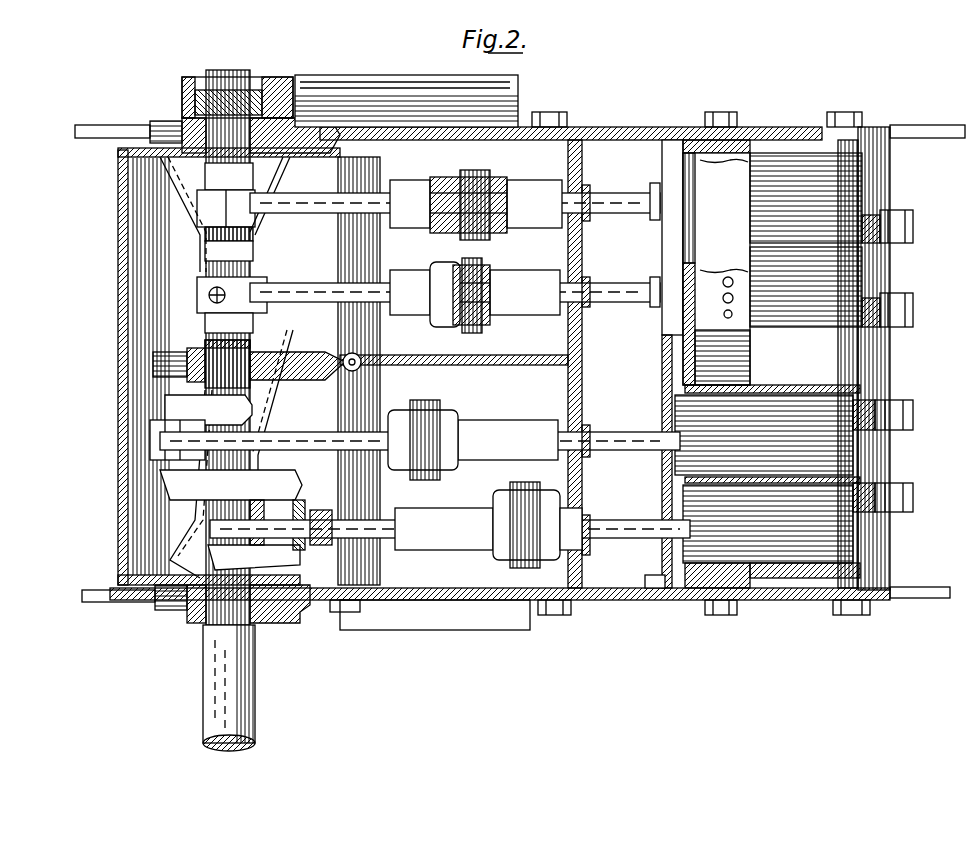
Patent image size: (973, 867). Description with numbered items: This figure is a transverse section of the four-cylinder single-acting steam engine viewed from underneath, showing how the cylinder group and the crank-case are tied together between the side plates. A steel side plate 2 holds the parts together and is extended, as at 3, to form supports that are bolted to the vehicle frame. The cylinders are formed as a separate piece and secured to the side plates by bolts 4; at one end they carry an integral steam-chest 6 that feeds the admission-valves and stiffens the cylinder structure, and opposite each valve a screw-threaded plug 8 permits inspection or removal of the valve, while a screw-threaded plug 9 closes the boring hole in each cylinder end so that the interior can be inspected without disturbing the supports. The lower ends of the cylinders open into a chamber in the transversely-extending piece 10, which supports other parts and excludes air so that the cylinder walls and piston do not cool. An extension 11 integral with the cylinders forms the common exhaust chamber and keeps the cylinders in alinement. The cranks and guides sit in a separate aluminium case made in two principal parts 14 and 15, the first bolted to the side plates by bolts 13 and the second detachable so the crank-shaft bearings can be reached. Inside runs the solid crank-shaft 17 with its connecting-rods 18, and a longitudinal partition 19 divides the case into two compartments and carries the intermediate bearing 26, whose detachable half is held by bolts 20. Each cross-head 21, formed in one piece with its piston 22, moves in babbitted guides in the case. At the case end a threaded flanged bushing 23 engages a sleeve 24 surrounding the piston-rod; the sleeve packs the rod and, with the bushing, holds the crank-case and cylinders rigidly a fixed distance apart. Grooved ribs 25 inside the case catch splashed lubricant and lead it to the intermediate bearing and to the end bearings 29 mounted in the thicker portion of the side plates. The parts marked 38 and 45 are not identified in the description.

The side plate 2 is at (627, 127).
The extension 3 is at (75, 130).
The bolt 4 is at (728, 612).
The steam-chest 6 is at (888, 163).
The screw-threaded plug 8 is at (905, 222).
The screw-threaded plug 9 is at (892, 527).
The transversely-extending piece 10 is at (660, 243).
The extension 11 is at (740, 354).
The bolt 13 is at (556, 614).
The case part 14 is at (452, 567).
The case part 15 is at (118, 213).
The crank-shaft 17 is at (210, 679).
The connecting-rod 18 is at (386, 300).
The partition 19 is at (497, 366).
The bolt 20 is at (153, 353).
The cross-head 21 is at (507, 522).
The piston 22 is at (808, 578).
The flanged bushing 23 is at (590, 543).
The sleeve 24 is at (655, 585).
The rib 25 is at (180, 535).
The intermediate bearing 26 is at (205, 345).
The end bearing 29 is at (200, 612).
The nut 38 is at (197, 99).
The cylinder 45 is at (371, 77).